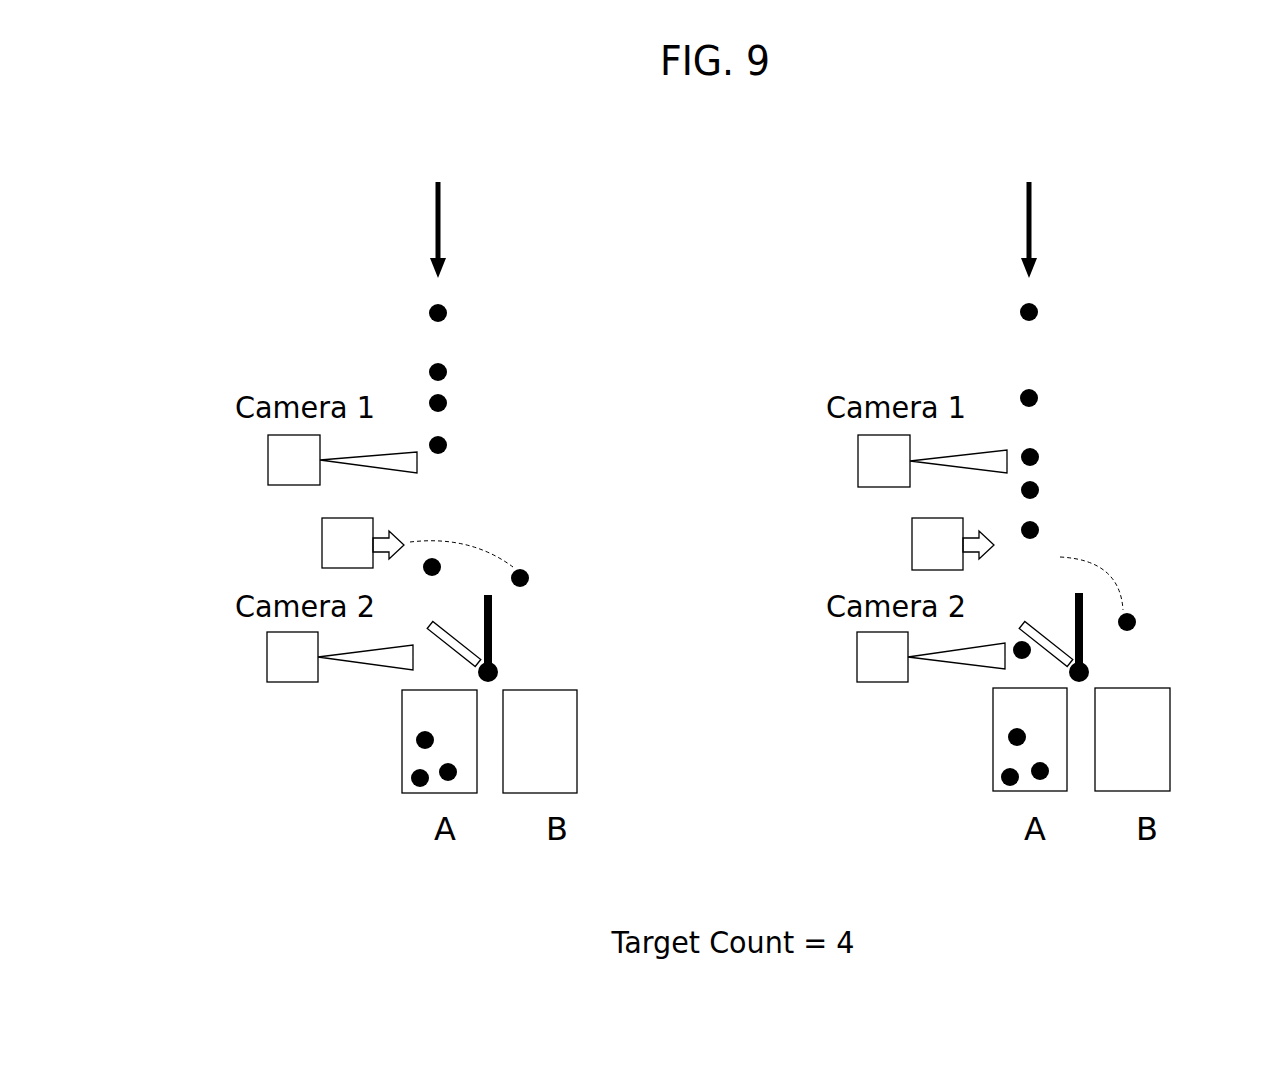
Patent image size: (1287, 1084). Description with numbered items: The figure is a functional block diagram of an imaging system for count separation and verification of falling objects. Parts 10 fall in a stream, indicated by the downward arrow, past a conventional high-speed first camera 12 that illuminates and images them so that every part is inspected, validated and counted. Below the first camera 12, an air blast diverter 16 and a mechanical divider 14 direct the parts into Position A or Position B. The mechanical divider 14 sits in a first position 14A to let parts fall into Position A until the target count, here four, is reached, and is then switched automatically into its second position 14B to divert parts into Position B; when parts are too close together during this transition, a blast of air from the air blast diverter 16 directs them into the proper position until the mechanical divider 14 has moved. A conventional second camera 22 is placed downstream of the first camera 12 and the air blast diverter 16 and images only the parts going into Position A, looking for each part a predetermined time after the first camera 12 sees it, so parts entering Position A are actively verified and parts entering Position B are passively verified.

The parts 10 is at (490, 359).
The first camera 12 is at (272, 462).
The mechanical divider 14 is at (774, 658).
The first position 14A is at (493, 613).
The second position 14B is at (463, 655).
The air blast diverter 16 is at (325, 527).
The second camera 22 is at (273, 665).